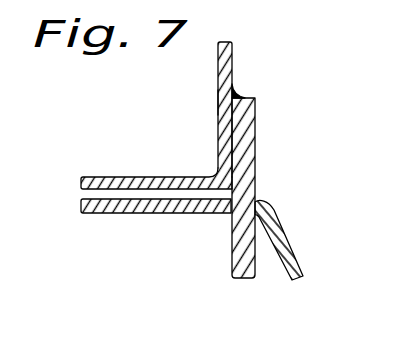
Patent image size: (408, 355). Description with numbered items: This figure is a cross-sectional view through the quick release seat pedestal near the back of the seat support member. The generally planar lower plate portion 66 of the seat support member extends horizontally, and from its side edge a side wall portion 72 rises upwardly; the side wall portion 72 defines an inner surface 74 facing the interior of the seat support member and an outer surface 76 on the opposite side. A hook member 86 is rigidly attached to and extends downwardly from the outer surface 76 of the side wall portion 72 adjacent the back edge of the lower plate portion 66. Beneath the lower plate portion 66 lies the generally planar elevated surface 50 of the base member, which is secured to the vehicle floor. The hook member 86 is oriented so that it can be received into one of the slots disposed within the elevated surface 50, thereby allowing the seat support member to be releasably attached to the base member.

The elevated surface 50 is at (122, 214).
The lower plate portion 66 is at (127, 177).
The side wall portion 72 is at (233, 47).
The inner surface 74 is at (218, 101).
The outer surface 76 is at (236, 72).
The hook member 86 is at (251, 143).